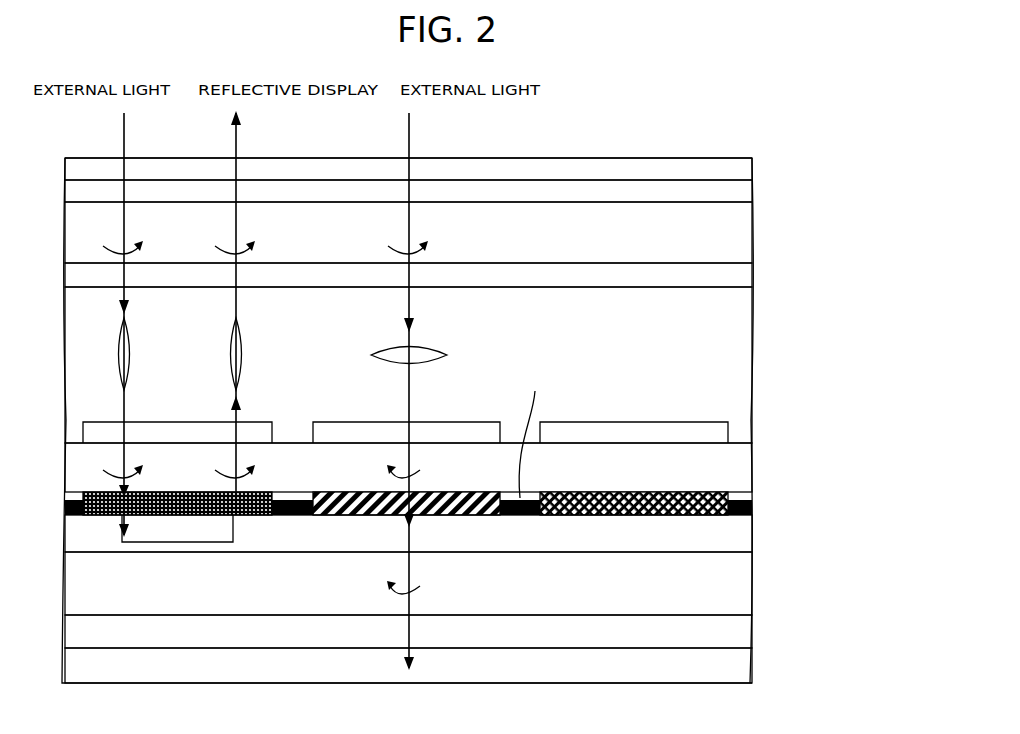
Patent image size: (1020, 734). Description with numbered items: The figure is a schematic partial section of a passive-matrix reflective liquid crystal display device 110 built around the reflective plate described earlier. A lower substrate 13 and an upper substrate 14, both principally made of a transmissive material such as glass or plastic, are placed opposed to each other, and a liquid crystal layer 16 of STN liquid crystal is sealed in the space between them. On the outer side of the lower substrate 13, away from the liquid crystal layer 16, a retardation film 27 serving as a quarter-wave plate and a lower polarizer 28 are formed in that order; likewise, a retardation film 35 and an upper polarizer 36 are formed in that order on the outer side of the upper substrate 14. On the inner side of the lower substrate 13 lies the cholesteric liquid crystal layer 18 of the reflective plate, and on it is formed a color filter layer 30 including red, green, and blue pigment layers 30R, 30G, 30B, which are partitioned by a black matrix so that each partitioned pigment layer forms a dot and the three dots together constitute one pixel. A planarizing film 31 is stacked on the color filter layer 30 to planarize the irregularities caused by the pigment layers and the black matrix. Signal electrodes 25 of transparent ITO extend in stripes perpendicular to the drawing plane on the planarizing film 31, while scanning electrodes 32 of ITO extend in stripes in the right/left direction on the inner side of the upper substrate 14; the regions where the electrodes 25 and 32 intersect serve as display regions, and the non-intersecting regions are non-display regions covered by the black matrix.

The liquid crystal display device 110 is at (700, 146).
The upper polarizer 36 is at (755, 158).
The retardation film 35 is at (748, 190).
The upper substrate 14 is at (742, 227).
The scanning electrodes 32 is at (738, 270).
The liquid crystal layer 16 is at (738, 322).
The signal electrodes 25 is at (720, 433).
The planarizing film 31 is at (732, 460).
The color filter layer 30 is at (455, 489).
The R pigment layer 30R is at (100, 516).
The G pigment layer 30G is at (493, 546).
The B pigment layer 30B is at (628, 516).
The cholesteric liquid crystal layer 18 is at (732, 528).
The lower substrate 13 is at (735, 586).
The retardation film 27 is at (743, 632).
The lower polarizer 28 is at (742, 658).